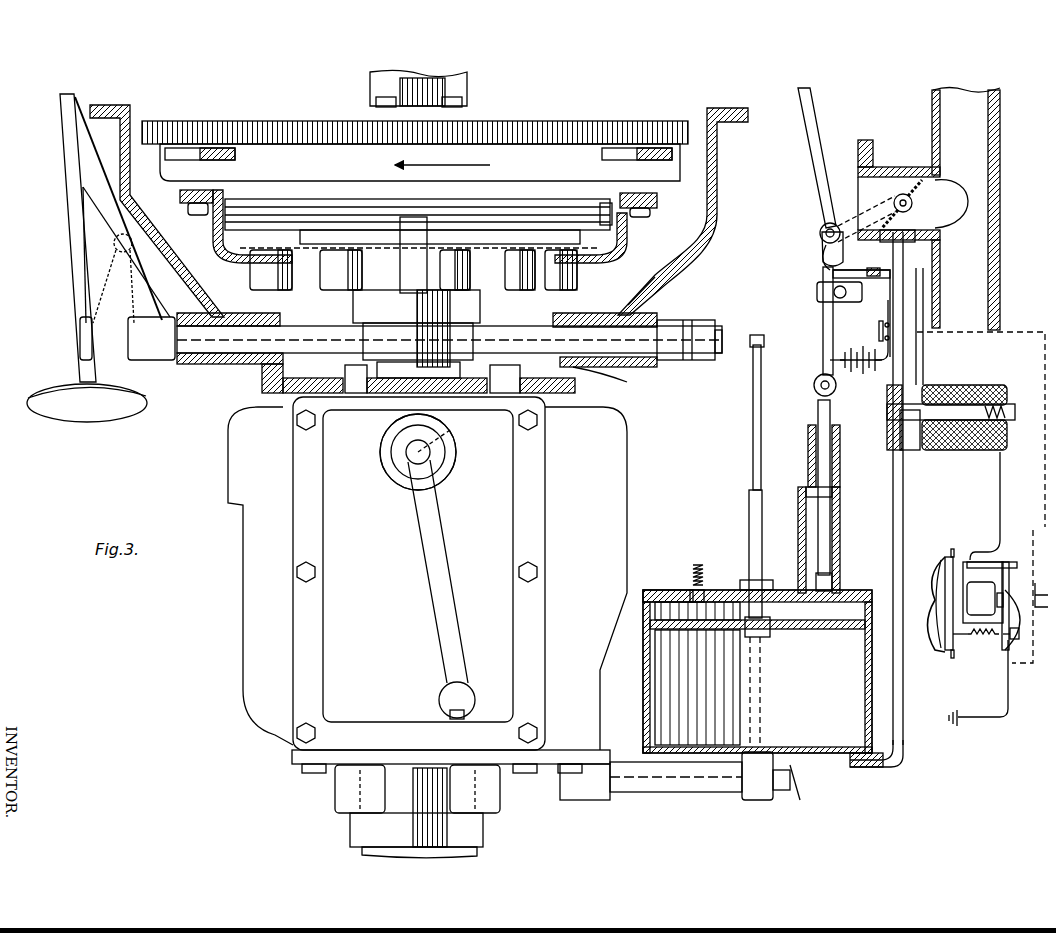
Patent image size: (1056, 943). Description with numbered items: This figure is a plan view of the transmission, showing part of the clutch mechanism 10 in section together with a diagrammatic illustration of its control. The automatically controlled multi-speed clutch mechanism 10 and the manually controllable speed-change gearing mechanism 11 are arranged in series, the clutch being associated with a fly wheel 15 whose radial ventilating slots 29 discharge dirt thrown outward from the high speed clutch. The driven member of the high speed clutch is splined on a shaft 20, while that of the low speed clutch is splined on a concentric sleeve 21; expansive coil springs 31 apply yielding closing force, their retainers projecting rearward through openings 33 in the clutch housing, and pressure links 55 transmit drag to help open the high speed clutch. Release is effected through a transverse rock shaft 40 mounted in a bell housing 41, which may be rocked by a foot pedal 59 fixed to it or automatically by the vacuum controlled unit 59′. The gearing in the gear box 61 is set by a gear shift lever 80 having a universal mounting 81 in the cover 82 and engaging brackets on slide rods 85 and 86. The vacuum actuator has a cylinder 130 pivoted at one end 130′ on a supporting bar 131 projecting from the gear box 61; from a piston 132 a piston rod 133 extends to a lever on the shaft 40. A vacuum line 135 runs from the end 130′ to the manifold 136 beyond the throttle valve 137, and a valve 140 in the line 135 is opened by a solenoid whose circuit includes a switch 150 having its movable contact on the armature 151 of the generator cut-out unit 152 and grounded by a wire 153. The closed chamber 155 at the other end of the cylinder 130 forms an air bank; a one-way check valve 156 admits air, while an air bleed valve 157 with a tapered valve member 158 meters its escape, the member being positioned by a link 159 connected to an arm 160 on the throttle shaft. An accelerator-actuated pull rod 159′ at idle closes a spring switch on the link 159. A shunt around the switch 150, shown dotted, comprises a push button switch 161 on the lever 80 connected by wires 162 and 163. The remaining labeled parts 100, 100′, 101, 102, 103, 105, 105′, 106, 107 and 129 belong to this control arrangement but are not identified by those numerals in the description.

The clutch mechanism 10 is at (672, 200).
The speed-change gearing mechanism 11 is at (240, 598).
The fly wheel 15 is at (592, 128).
The shaft 20 is at (200, 217).
The concentric sleeve 21 is at (468, 345).
The radial ventilating slots 29 is at (185, 155).
The expansive coil springs 31 is at (250, 240).
The openings 33 is at (322, 278).
The rock shaft 40 is at (600, 352).
The bell housing 41 is at (685, 262).
The pressure links 55 is at (620, 222).
The foot pedal 59 is at (72, 283).
The vacuum controlled unit 59′ is at (798, 768).
The gear box 61 is at (527, 530).
The gear shift lever 80 is at (433, 518).
The universal mounting 81 is at (428, 450).
The cover 82 is at (498, 478).
The slide rod 85 is at (490, 375).
The slide rod 86 is at (345, 375).
The spring 100 is at (855, 325).
The spring end 100′ is at (838, 358).
The knob 101 is at (988, 398).
The knob 102 is at (945, 385).
The bracket 103 is at (900, 432).
The bracket 105 is at (872, 322).
The bracket arm 105′ is at (879, 324).
The bracket 106 is at (818, 295).
The pipe 107 is at (920, 280).
The wire 129 is at (1002, 480).
The cylinder 130 is at (652, 695).
The cylinder end 130′ is at (818, 758).
The supporting bar 131 is at (690, 792).
The piston 132 is at (720, 632).
The piston rod 133 is at (752, 517).
The vacuum line 135 is at (900, 748).
The manifold 136 is at (962, 300).
The throttle valve 137 is at (912, 205).
The valve 140 is at (838, 390).
The switch 150 is at (1010, 558).
The shiftable armature 151 is at (1017, 650).
The generator cut-out unit 152 is at (970, 643).
The wire 153 is at (990, 720).
The closed chamber 155 is at (720, 595).
The one-way check valve 156 is at (690, 615).
The air bleed valve 157 is at (840, 568).
The tapered valve member 158 is at (830, 515).
The positioning link 159 is at (824, 306).
The accelerator-actuated pull rod 159′ is at (815, 158).
The arm 160 is at (822, 212).
The push button switch 161 is at (445, 716).
The wire 162 is at (1038, 520).
The wire 163 is at (1030, 648).